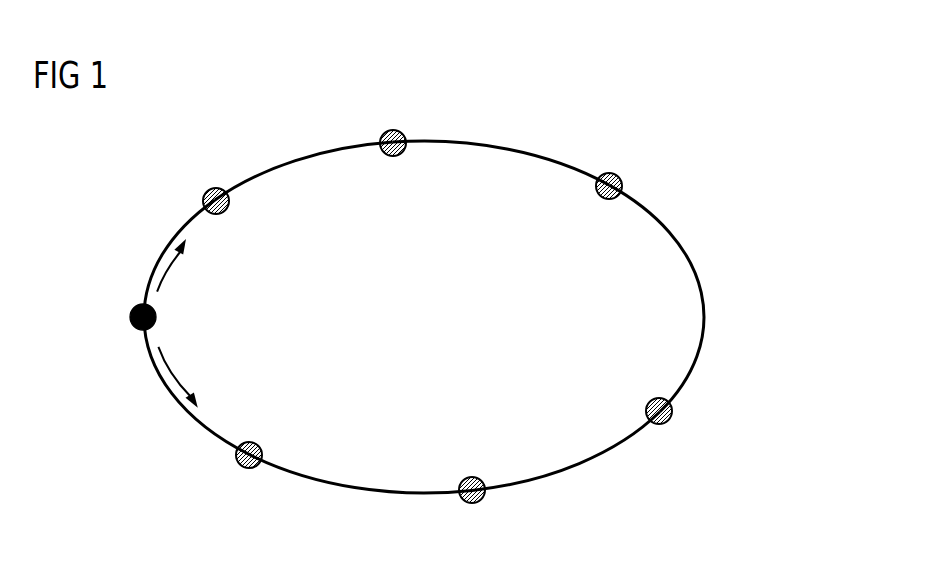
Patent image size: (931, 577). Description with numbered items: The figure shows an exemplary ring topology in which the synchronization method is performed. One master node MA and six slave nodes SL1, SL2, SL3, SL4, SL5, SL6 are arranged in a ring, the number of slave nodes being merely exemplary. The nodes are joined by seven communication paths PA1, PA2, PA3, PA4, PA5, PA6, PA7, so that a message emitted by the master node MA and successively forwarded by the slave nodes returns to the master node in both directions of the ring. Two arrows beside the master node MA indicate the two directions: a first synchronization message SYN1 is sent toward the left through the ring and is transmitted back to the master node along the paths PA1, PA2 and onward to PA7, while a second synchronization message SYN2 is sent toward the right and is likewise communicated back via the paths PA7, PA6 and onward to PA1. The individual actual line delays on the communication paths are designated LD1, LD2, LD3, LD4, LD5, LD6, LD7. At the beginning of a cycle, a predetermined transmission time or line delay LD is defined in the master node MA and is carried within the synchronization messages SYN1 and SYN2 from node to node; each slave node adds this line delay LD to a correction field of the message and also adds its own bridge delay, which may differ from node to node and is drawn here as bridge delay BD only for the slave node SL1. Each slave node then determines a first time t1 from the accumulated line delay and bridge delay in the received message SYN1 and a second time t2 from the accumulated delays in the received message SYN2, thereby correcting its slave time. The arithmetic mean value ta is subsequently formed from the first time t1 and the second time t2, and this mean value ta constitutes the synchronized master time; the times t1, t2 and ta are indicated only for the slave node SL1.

The master node MA is at (93, 315).
The line delay LD is at (130, 317).
The slave node SL1 is at (172, 482).
The slave node SL2 is at (471, 504).
The slave node SL3 is at (667, 424).
The slave node SL4 is at (612, 173).
The slave node SL5 is at (393, 129).
The slave node SL6 is at (211, 188).
The communication path PA1 is at (159, 386).
The communication path PA2 is at (361, 501).
The communication path PA3 is at (566, 465).
The communication path PA4 is at (716, 298).
The communication path PA5 is at (501, 140).
The communication path PA6 is at (304, 153).
The communication path PA7 is at (133, 258).
The actual line delay LD1 is at (180, 407).
The actual line delay LD2 is at (348, 487).
The actual line delay LD3 is at (587, 463).
The actual line delay LD4 is at (705, 316).
The actual line delay LD5 is at (510, 148).
The actual line delay LD6 is at (297, 160).
The actual line delay LD7 is at (162, 256).
The bridge delay BD is at (172, 482).
The first time t1 is at (172, 482).
The second time t2 is at (172, 482).
The arithmetic mean value ta is at (247, 470).
The first synchronization message SYN1 is at (167, 368).
The second synchronization message SYN2 is at (165, 266).